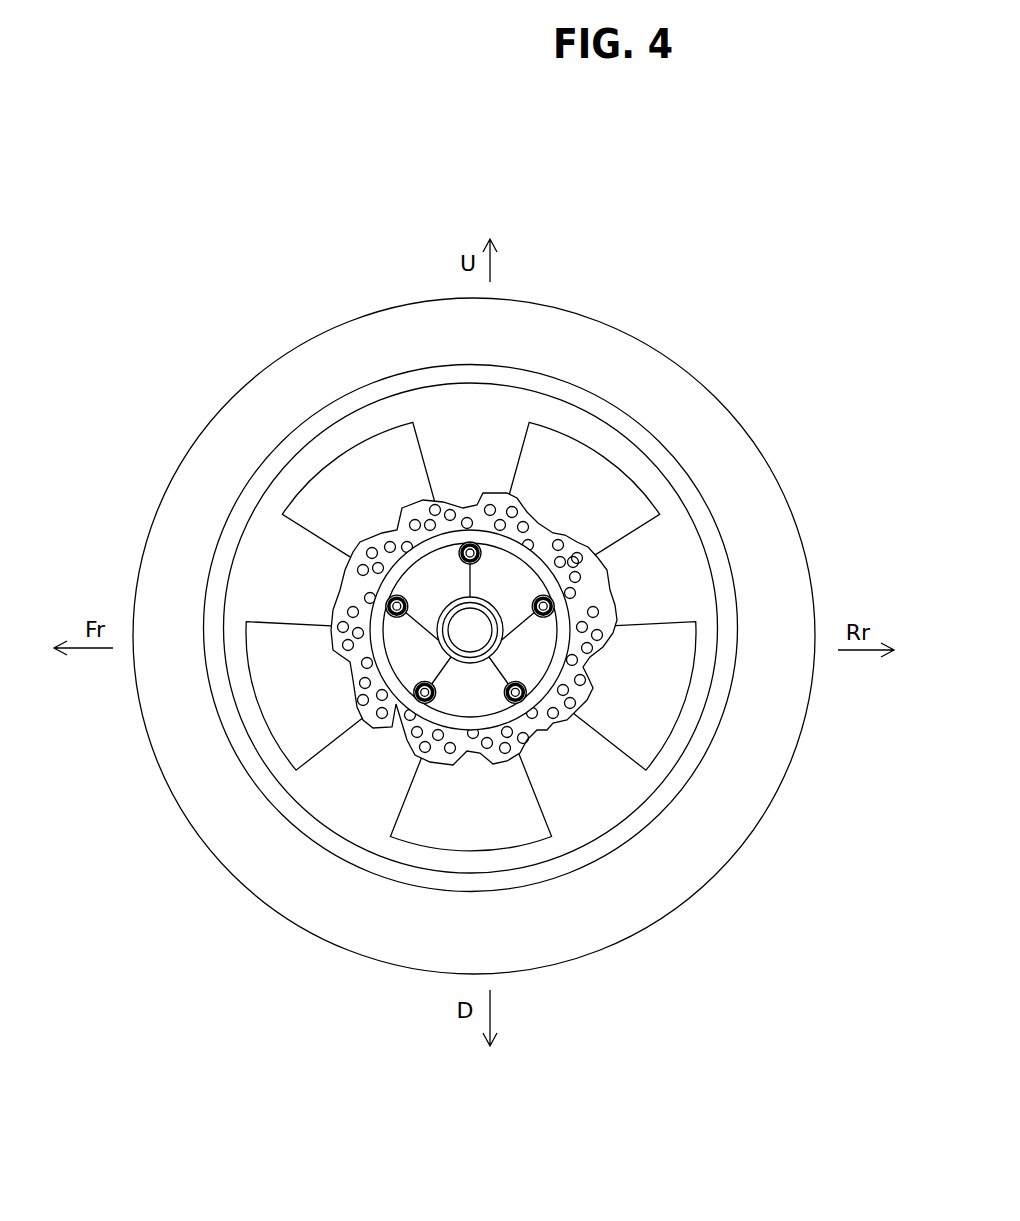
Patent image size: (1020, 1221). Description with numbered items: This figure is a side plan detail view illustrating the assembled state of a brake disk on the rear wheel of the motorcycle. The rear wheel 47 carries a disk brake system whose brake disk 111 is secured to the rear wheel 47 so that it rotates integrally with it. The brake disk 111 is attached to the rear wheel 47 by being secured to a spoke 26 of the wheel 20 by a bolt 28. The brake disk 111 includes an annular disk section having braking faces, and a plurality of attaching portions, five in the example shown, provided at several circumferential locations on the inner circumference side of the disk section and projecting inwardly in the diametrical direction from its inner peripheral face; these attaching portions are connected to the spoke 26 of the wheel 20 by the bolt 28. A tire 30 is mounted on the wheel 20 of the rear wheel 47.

The wheel 20 is at (710, 705).
The spoke 26 is at (528, 784).
The bolt 28 is at (462, 546).
The tire 30 is at (650, 343).
The rear wheel 47 is at (737, 373).
The brake disk 111 is at (545, 511).